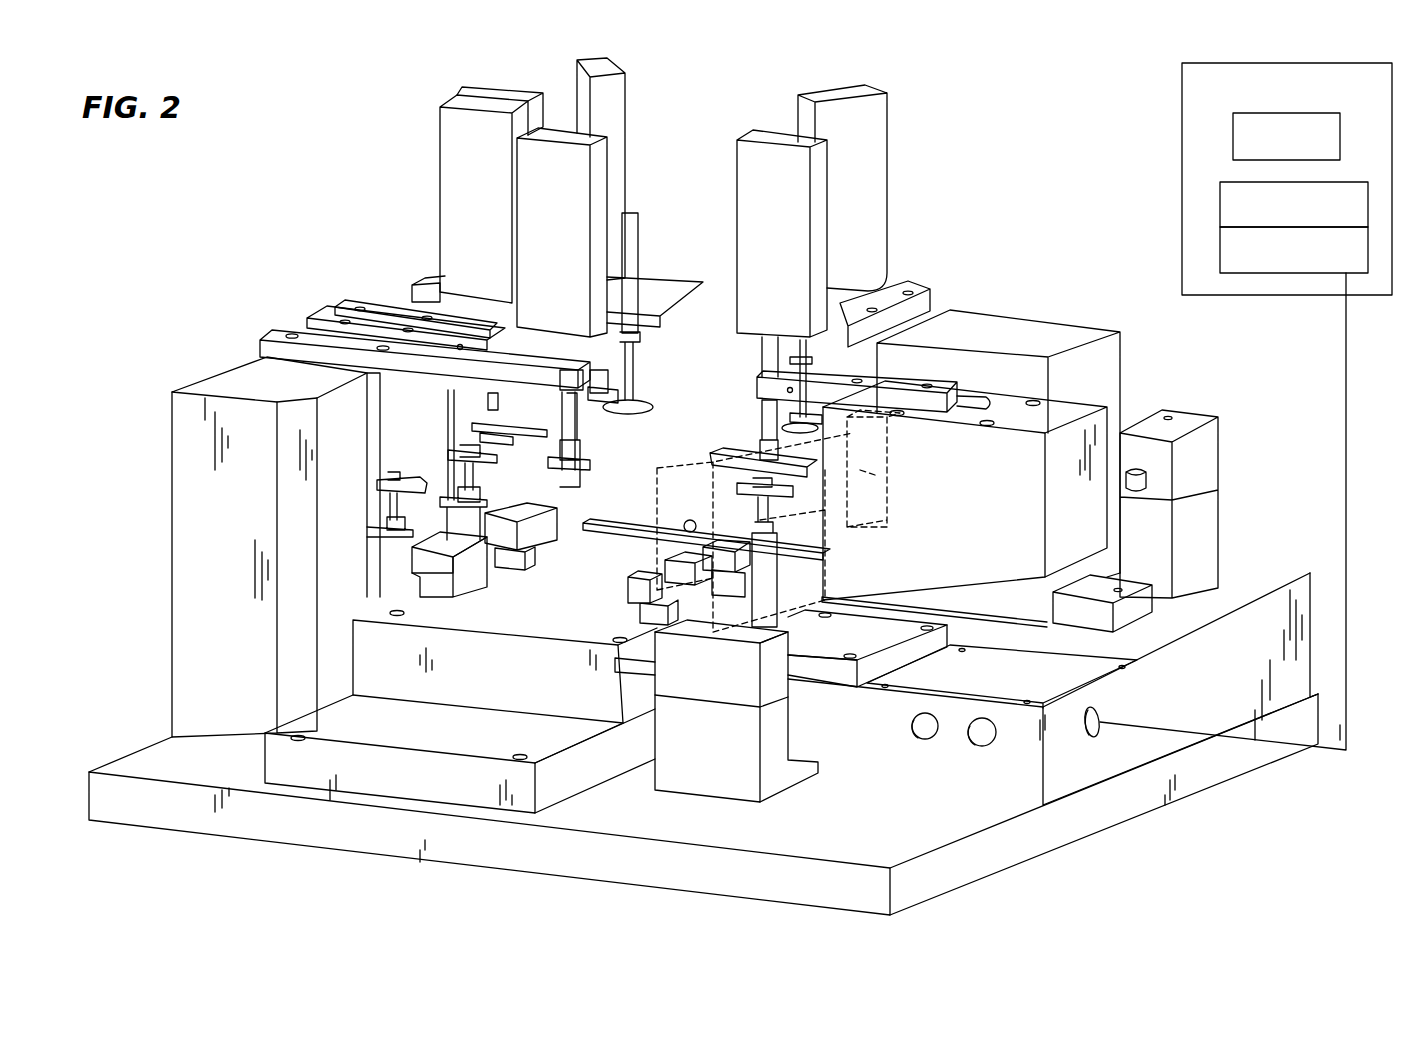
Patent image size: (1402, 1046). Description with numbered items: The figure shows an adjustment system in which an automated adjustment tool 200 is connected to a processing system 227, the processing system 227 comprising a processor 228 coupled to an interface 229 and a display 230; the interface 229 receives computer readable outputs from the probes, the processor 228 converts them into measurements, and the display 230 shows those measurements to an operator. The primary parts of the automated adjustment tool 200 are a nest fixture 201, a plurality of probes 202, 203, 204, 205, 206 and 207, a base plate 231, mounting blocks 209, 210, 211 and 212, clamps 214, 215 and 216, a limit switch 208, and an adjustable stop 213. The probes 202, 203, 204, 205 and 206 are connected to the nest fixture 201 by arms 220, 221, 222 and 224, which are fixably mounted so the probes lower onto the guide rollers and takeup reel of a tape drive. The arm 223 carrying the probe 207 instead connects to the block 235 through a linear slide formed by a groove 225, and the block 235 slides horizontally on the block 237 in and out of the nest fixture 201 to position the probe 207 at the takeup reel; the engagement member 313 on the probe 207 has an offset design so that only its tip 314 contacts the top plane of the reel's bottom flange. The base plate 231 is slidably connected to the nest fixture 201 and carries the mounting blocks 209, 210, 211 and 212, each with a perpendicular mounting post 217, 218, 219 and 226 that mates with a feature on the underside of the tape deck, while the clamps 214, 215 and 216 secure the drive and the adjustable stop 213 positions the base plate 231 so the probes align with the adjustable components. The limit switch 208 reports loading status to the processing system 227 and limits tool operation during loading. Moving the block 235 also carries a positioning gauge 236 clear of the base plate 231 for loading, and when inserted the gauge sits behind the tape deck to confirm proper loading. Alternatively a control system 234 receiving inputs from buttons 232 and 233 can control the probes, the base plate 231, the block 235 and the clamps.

The automated adjustment tool 200 is at (274, 166).
The nest fixture 201 is at (185, 508).
The probe 202 is at (468, 165).
The probe 203 is at (490, 84).
The probe 204 is at (628, 100).
The probe 205 is at (538, 232).
The probe 206 is at (877, 123).
The probe 207 is at (753, 177).
The limit switch 208 is at (642, 667).
The mounting block 209 is at (468, 580).
The mounting block 210 is at (553, 528).
The mounting block 211 is at (633, 595).
The mounting block 212 is at (827, 580).
The adjustable stop 213 is at (686, 521).
The clamp 214 is at (420, 493).
The clamp 215 is at (503, 440).
The clamp 216 is at (778, 497).
The mounting post 217 is at (413, 548).
The mounting post 218 is at (640, 538).
The mounting post 219 is at (732, 540).
The arm 220 is at (305, 318).
The arm 221 is at (265, 338).
The arm 222 is at (917, 290).
The arm 223 is at (900, 375).
The arm 224 is at (350, 300).
The groove 225 is at (977, 393).
The mounting post 226 is at (492, 512).
The processing system 227 is at (1182, 88).
The processor 228 is at (1220, 194).
The interface 229 is at (1220, 243).
The display 230 is at (1233, 130).
The base plate 231 is at (563, 701).
The button 232 is at (912, 724).
The button 233 is at (990, 734).
The control system 234 is at (1031, 679).
The block 235 is at (1005, 502).
The positioning gauge 236 is at (872, 528).
The block 237 is at (1142, 604).
The engagement member 313 is at (745, 447).
The tip 314 is at (710, 460).